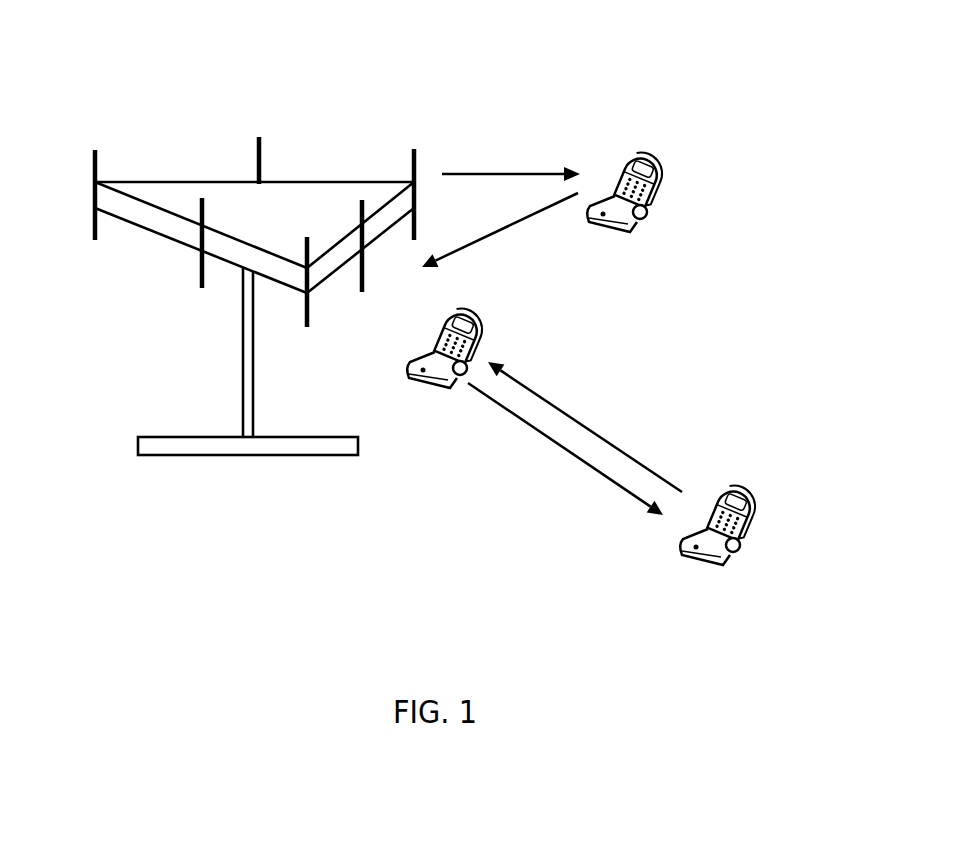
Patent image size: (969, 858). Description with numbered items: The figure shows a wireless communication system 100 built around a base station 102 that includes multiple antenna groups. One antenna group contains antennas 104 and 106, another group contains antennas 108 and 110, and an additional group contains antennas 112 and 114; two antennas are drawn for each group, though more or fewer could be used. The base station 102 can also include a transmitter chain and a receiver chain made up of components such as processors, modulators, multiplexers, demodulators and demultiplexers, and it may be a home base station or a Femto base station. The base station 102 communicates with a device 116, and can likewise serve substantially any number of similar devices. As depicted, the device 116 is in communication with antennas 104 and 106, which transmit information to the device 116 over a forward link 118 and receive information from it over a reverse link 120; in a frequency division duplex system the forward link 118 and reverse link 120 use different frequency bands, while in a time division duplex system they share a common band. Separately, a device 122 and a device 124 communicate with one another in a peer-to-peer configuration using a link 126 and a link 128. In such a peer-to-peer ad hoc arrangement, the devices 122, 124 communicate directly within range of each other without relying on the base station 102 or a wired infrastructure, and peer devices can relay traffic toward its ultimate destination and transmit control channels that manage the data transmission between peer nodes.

The wireless communication system 100 is at (765, 34).
The base station 102 is at (290, 455).
The antenna 104 is at (415, 151).
The antenna 106 is at (362, 292).
The antenna 108 is at (307, 327).
The antenna 110 is at (202, 288).
The antenna 112 is at (95, 151).
The antenna 114 is at (259, 139).
The device 116 is at (646, 160).
The forward link 118 is at (495, 174).
The reverse link 120 is at (492, 235).
The device 122 is at (472, 315).
The device 124 is at (739, 493).
The link 126 is at (568, 452).
The link 128 is at (577, 420).